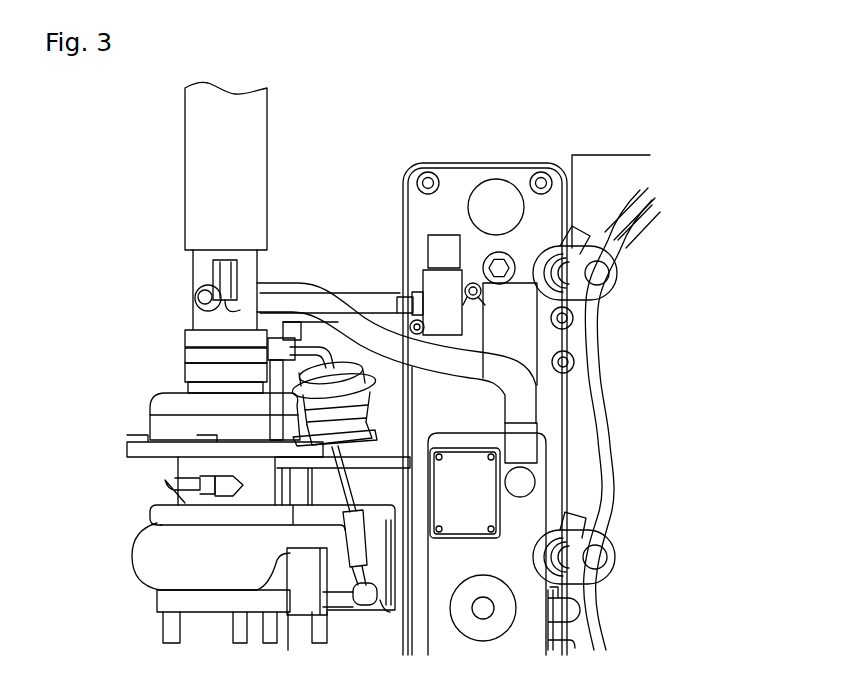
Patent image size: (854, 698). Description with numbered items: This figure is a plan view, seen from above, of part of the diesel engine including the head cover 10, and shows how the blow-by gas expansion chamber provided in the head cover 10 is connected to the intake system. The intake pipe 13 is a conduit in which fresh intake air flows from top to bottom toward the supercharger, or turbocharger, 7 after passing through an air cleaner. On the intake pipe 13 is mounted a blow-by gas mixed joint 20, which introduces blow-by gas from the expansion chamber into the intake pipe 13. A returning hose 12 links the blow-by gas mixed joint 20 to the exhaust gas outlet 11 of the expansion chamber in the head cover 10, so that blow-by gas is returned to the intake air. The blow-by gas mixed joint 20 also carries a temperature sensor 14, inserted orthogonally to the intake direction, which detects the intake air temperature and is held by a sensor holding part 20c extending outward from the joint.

The supercharger (turbocharger) 7 is at (185, 500).
The head cover 10 is at (547, 230).
The exhaust gas outlet 11 is at (525, 480).
The returning hose 12 is at (495, 358).
The intake pipe 13 is at (267, 197).
The temperature sensor 14 is at (193, 280).
The blow-by gas mixed joint 20 is at (193, 320).
The sensor holding part 20c is at (255, 295).